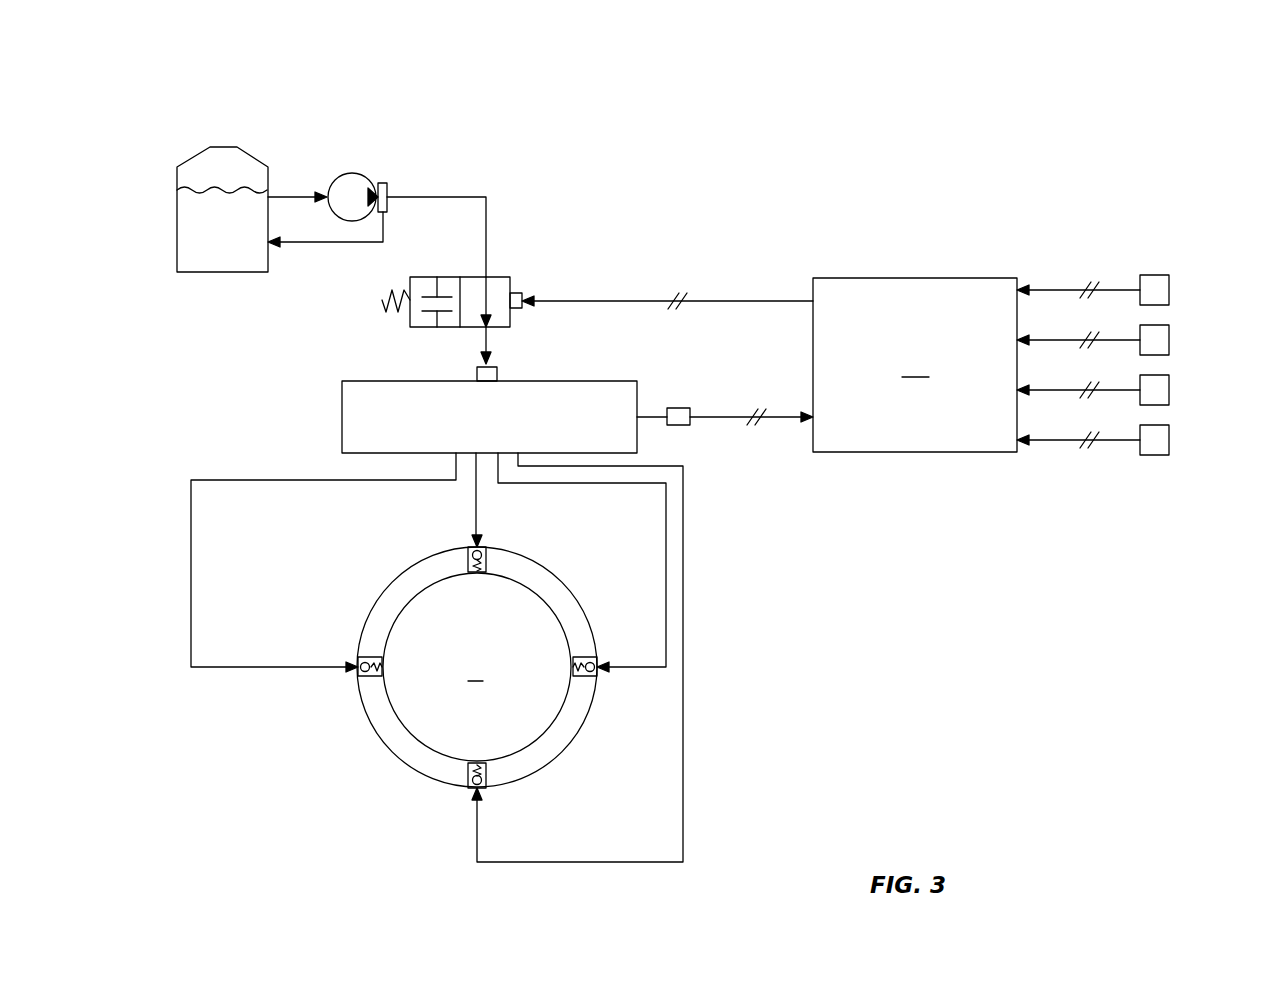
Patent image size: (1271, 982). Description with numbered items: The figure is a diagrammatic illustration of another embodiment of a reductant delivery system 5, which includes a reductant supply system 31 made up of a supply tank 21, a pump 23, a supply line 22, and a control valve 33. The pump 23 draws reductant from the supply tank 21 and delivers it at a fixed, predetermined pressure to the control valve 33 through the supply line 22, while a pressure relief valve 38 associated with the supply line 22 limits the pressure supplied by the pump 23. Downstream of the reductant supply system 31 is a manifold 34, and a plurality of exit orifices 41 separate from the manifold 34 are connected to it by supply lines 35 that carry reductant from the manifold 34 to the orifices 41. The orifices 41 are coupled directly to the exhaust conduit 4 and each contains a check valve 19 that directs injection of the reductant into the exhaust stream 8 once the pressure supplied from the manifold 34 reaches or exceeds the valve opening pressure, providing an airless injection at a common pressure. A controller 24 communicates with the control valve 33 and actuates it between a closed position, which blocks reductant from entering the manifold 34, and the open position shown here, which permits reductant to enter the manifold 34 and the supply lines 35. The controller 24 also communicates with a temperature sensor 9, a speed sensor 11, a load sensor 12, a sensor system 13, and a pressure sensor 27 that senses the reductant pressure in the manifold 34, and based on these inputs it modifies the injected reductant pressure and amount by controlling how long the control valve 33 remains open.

The reductant delivery system 5 is at (110, 87).
The supply tank 21 is at (177, 197).
The reductant supply system 31 is at (133, 250).
The pump 23 is at (353, 174).
The pressure relief valve 38 is at (385, 184).
The supply line 22 is at (486, 222).
The control valve 33 is at (384, 290).
The manifold 34 is at (342, 411).
The pressure sensor 27 is at (682, 408).
The controller 24 is at (915, 365).
The temperature sensor 9 is at (1169, 290).
The speed sensor 11 is at (1169, 340).
The load sensor 12 is at (1169, 390).
The sensor system 13 is at (1169, 440).
The supply lines 35 is at (191, 490).
The exhaust stream 8 is at (477, 667).
The exhaust conduit 4 is at (358, 648).
The check valve 19 is at (487, 563).
The exit orifices 41 is at (468, 559).